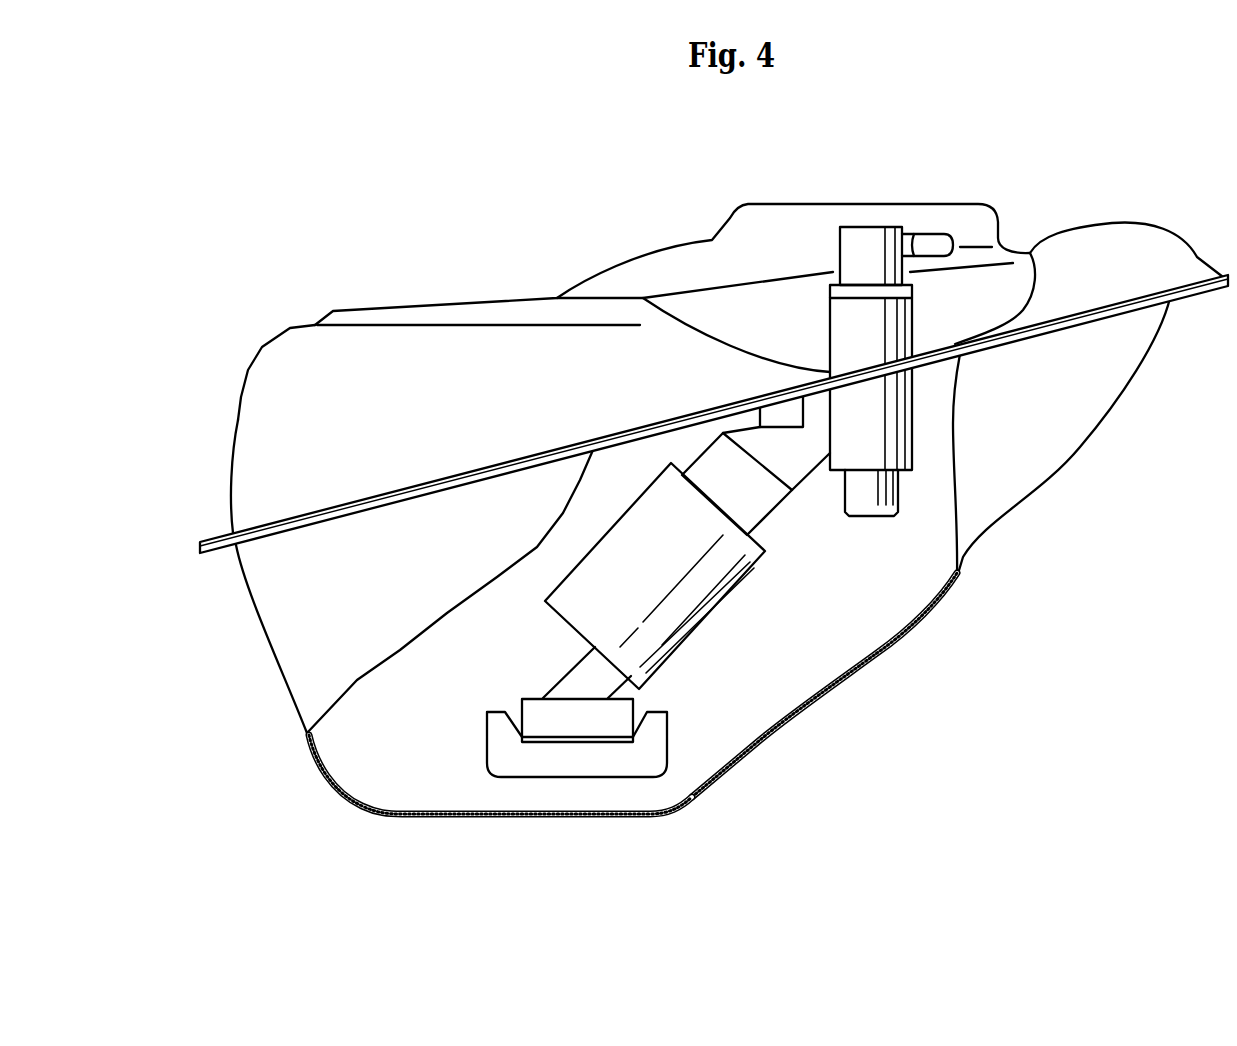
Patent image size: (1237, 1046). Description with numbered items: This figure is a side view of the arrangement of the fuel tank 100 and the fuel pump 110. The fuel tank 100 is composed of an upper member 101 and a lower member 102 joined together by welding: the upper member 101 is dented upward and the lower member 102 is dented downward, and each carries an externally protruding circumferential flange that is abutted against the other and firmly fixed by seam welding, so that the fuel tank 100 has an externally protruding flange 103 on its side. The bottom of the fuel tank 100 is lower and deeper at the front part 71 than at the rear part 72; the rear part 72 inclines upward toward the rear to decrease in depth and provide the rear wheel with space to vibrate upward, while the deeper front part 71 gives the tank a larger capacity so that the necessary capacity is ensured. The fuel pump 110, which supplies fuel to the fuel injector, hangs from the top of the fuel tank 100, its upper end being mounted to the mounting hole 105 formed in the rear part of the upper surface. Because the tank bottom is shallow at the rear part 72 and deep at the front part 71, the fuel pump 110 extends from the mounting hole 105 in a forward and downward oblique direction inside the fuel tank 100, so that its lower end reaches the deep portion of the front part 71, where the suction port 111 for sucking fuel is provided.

The fuel tank 100 is at (433, 231).
The upper member 101 is at (278, 350).
The lower member 102 is at (292, 625).
The flange 103 is at (500, 466).
The mounting hole 105 is at (920, 341).
The fuel pump 110 is at (756, 615).
The suction port 111 is at (597, 781).
The front part 71 is at (430, 800).
The rear part 72 is at (905, 614).